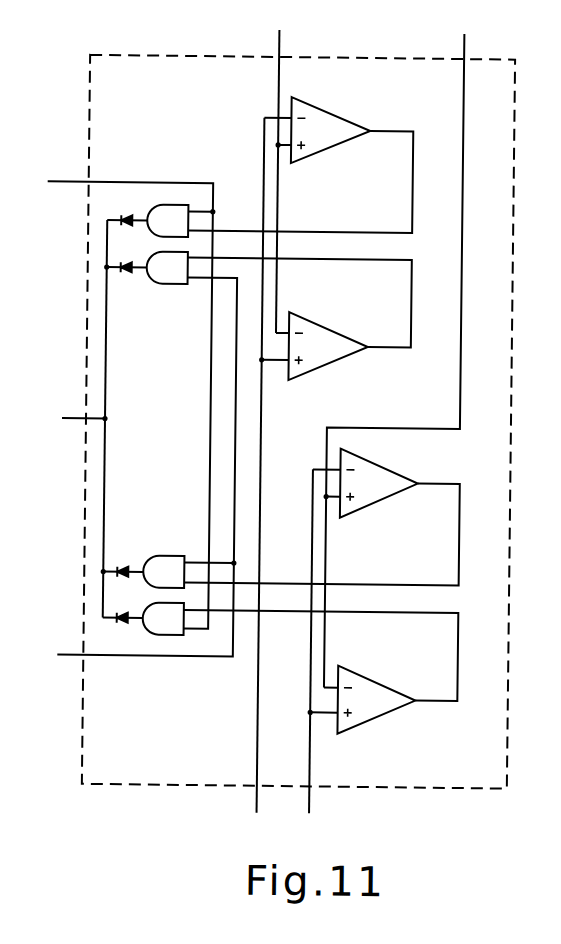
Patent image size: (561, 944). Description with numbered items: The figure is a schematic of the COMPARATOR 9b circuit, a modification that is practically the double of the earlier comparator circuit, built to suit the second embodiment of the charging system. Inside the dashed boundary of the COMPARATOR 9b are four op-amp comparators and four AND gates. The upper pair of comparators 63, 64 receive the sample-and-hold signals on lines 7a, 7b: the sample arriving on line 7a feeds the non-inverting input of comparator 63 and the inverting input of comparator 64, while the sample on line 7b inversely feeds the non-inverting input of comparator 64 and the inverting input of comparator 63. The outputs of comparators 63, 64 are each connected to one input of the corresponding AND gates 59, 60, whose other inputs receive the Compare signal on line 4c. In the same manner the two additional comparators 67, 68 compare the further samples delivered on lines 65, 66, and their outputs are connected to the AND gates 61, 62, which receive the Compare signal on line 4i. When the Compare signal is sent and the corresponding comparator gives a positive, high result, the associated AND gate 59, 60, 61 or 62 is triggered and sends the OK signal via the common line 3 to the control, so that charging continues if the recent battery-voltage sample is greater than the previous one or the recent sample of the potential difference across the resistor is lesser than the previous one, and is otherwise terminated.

The COMPARATOR circuit 9b is at (150, 57).
The line from S/H 5a 7a is at (275, 41).
The line from S/H 5b 7b is at (261, 807).
The line from S/H 5c 65 is at (460, 42).
The line from S/H 5d 66 is at (314, 806).
The Compare signal line 4c is at (78, 184).
The Compare signal line 4i is at (72, 657).
The OK signal line 3 is at (72, 420).
The AND gate IC 59 is at (172, 206).
The AND gate IC 60 is at (172, 286).
The AND gate IC 61 is at (170, 557).
The AND gate IC 62 is at (165, 636).
The comparator IC 63 is at (330, 146).
The comparator IC 64 is at (325, 328).
The comparator 67 is at (378, 500).
The comparator 68 is at (377, 681).